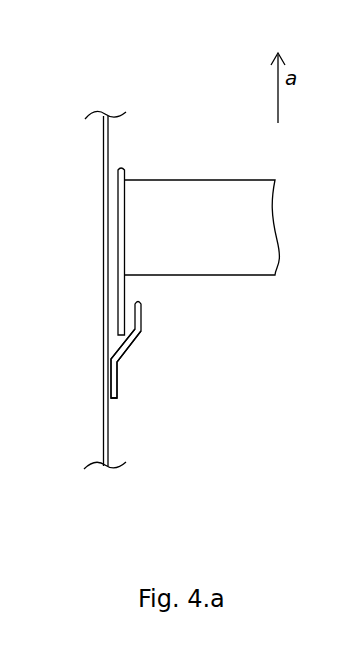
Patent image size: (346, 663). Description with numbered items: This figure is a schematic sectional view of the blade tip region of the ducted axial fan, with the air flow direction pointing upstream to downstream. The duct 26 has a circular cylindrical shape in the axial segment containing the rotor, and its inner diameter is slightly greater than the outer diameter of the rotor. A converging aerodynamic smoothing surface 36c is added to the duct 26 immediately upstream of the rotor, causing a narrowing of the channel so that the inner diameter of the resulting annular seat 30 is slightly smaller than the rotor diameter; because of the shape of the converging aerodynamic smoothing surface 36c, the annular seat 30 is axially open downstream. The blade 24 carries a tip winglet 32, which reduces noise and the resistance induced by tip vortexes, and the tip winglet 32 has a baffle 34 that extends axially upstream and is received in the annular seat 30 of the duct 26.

The duct 26 is at (103, 170).
The tip winglet 32 is at (126, 178).
The blade 24 is at (197, 207).
The baffle 34 is at (141, 300).
The converging aerodynamic smoothing surface 36c is at (141, 333).
The annular seat 30 is at (114, 345).